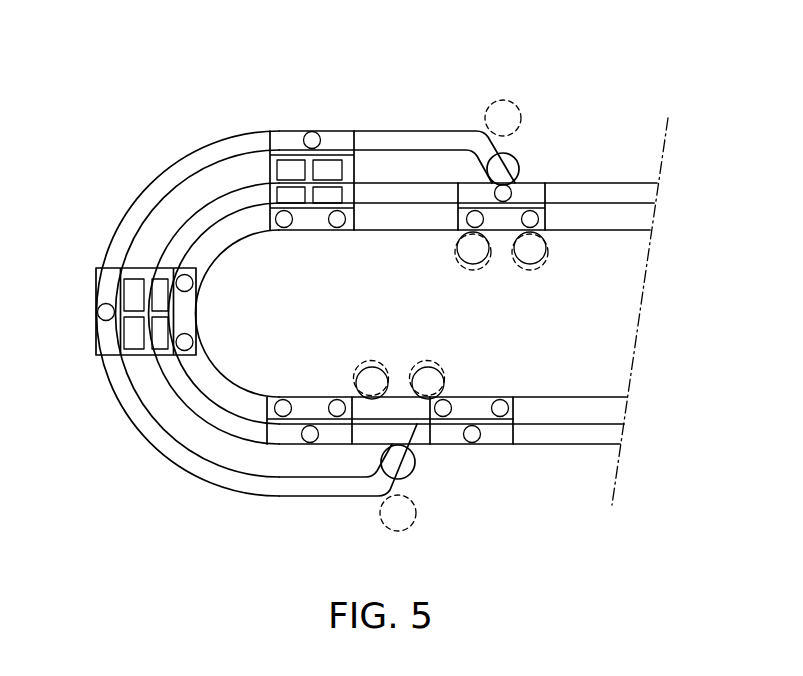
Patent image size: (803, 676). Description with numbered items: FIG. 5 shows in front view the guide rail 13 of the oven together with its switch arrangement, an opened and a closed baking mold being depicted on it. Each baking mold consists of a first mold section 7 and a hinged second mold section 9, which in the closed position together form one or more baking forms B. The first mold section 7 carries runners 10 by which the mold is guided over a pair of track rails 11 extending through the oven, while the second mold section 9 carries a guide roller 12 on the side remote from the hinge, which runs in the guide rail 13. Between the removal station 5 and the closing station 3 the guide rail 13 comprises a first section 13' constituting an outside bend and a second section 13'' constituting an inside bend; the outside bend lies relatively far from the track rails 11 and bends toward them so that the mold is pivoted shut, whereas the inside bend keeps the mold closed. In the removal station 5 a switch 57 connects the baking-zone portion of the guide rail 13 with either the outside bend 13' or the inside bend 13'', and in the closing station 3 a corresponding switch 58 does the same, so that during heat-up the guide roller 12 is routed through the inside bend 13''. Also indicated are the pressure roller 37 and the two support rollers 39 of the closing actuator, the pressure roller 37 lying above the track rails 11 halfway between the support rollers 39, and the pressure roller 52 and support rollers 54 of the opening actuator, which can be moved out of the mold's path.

The closing station 3 is at (633, 127).
The removal station 5 is at (586, 513).
The first mold section 7 is at (188, 313).
The second mold section 9 is at (100, 276).
The runners 10 is at (332, 398).
The track rails 11 is at (602, 232).
The guide roller 12 is at (96, 312).
The guide rail 13 is at (433, 311).
The first section of the guide rail 13' is at (306, 283).
The second section of the guide rail 13'' is at (359, 337).
The pressure roller 37 is at (516, 106).
The support rollers 39 is at (524, 252).
The pressure roller 52 is at (412, 518).
The support rollers 54 is at (424, 372).
The switch 57 is at (440, 462).
The switch 58 is at (550, 160).
The baking forms B is at (328, 170).